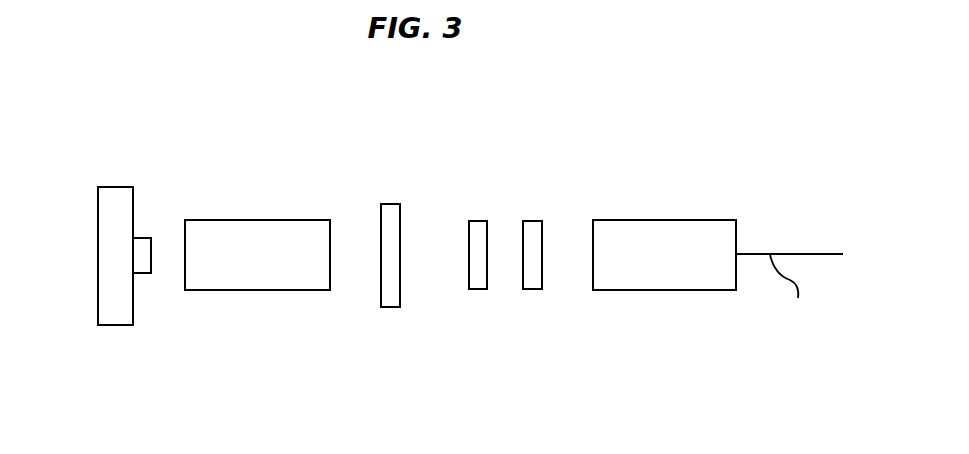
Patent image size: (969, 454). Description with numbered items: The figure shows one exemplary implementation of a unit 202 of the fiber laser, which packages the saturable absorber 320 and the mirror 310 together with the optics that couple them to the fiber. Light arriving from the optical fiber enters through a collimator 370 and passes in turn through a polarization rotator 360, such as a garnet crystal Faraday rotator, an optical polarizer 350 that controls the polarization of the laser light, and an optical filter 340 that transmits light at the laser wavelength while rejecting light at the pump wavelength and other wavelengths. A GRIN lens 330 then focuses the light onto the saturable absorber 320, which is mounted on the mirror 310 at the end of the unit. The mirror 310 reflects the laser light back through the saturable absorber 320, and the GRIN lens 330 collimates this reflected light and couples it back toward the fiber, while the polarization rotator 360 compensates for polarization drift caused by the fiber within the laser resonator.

The unit 202 is at (350, 92).
The mirror 310 is at (118, 325).
The saturable absorber 320 is at (141, 238).
The GRIN lens 330 is at (239, 279).
The optical filter 340 is at (390, 307).
The optical polarizer 350 is at (478, 289).
The polarization rotator 360 is at (531, 221).
The collimator 370 is at (647, 279).